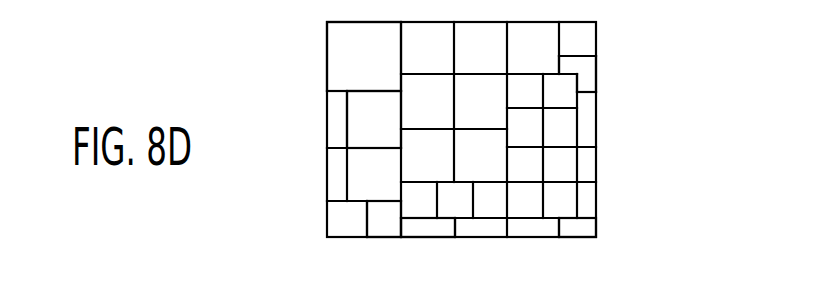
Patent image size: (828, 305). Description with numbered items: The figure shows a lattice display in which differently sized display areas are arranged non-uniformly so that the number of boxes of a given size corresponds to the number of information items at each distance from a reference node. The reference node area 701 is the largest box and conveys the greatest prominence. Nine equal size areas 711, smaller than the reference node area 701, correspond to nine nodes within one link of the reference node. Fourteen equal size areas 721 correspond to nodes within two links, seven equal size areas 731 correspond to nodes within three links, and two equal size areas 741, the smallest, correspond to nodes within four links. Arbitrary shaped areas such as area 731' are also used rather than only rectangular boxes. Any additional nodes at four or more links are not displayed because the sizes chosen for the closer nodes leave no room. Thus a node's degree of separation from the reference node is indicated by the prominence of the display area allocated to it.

The reference node area 701 is at (367, 55).
The equal size areas 711 is at (368, 117).
The equal size areas 721 is at (385, 221).
The equal size areas 731 is at (415, 251).
The arbitrary shaped area 731' is at (612, 74).
The equal size areas 741 is at (585, 226).